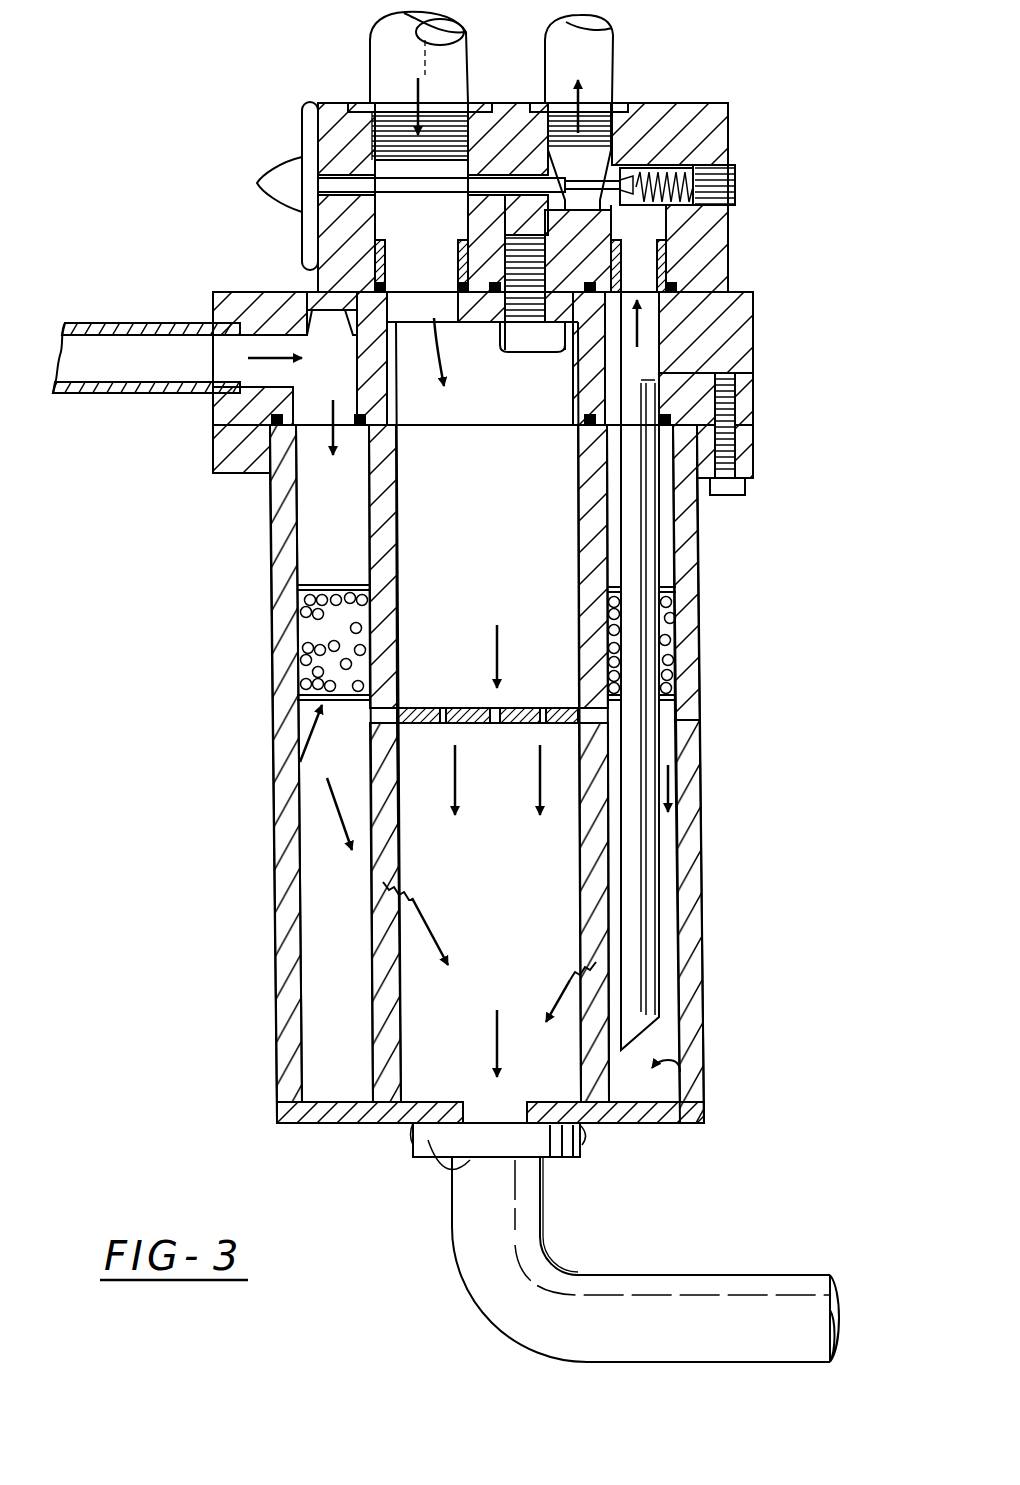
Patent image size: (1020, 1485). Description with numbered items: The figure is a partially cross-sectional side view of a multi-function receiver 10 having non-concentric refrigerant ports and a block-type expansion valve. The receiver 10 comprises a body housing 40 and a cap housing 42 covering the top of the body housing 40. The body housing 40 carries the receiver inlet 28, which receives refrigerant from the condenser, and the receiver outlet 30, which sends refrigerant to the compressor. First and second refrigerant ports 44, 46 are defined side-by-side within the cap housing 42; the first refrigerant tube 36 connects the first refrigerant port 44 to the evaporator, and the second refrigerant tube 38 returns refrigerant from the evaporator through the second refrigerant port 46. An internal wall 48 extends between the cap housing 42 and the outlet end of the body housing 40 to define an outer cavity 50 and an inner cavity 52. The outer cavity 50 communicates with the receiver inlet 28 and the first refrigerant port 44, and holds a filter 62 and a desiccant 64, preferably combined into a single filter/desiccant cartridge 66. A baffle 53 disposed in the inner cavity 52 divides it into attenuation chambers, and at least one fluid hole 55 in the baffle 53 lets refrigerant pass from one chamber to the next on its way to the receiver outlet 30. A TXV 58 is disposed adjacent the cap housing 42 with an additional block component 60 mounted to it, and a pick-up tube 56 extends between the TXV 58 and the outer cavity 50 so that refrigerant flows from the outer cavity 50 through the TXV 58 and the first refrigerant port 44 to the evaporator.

The multi-function receiver 10 is at (152, 740).
The receiver inlet 28 is at (270, 470).
The receiver outlet 30 is at (440, 1140).
The first refrigerant tube 36 is at (612, 52).
The second refrigerant tube 38 is at (370, 48).
The body housing 40 is at (693, 682).
The cap housing 42 is at (240, 292).
The first refrigerant port 44 is at (640, 328).
The second refrigerant port 46 is at (440, 380).
The internal wall 48 is at (580, 542).
The outer cavity 50 is at (348, 1049).
The inner cavity 52 is at (502, 926).
The baffle 53 is at (515, 706).
The fluid hole 55 is at (443, 723).
The pick-up tube 56 is at (655, 897).
The TXV 58 is at (262, 152).
The block component 60 is at (730, 105).
The filter 62 is at (300, 572).
The desiccant 64 is at (356, 598).
The filter/desiccant cartridge 66 is at (301, 748).